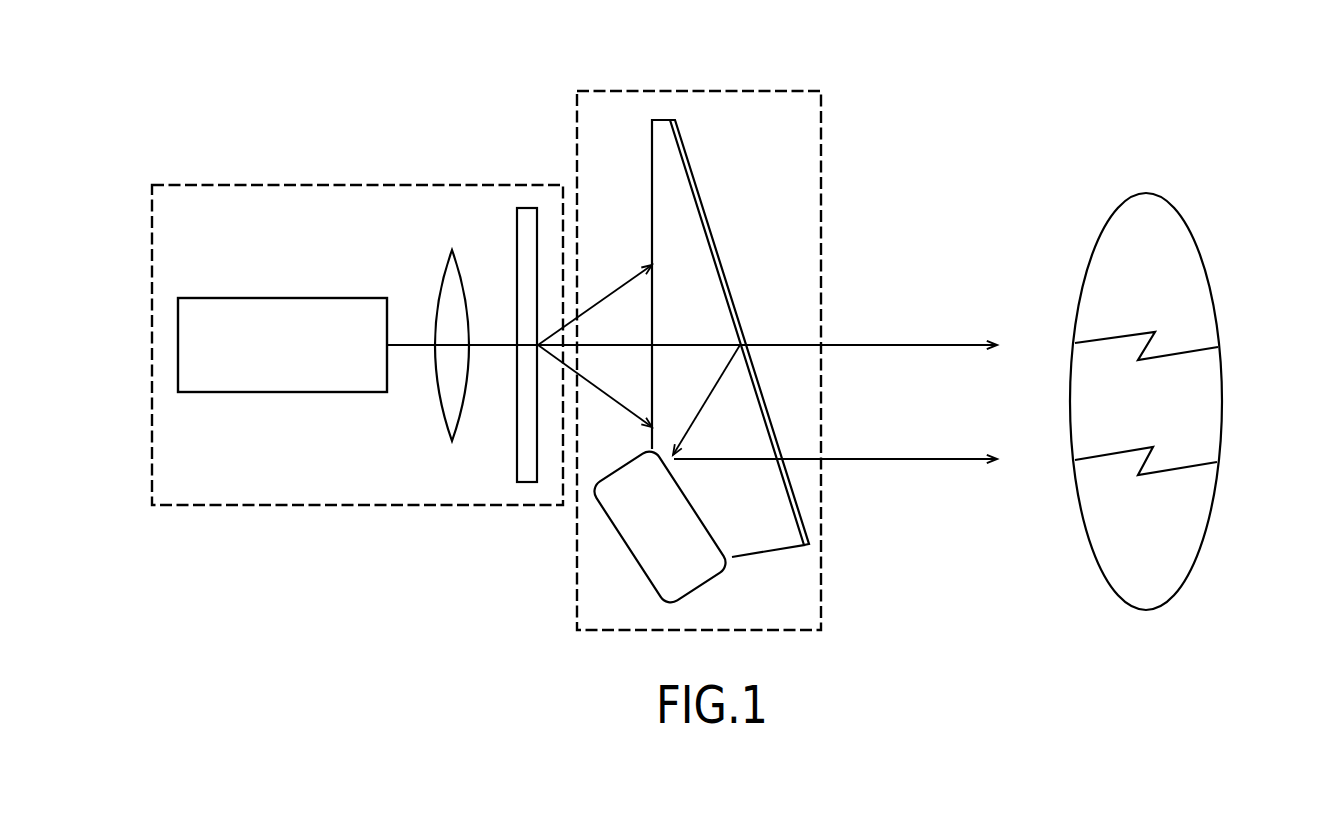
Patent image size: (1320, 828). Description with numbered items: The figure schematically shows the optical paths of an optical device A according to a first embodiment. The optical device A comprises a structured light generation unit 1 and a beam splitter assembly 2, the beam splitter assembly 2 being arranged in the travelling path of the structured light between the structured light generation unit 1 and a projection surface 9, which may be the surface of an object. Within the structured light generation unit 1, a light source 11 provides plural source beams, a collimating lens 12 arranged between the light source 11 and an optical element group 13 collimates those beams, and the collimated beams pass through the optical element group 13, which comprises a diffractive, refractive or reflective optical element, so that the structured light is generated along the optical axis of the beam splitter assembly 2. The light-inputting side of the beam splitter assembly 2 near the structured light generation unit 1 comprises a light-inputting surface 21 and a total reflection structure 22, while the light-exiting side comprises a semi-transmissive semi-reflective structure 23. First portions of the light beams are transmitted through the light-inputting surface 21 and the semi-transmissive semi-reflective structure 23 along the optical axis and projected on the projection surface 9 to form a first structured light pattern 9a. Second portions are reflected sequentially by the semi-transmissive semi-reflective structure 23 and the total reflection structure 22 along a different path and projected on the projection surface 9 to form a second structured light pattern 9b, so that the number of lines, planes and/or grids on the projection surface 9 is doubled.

The optical device A is at (457, 92).
The structured light generation unit 1 is at (252, 185).
The light source 11 is at (246, 312).
The collimating lens 12 is at (448, 297).
The optical element group 13 is at (528, 258).
The beam splitter assembly 2 is at (740, 92).
The light-inputting surface 21 is at (650, 205).
The total reflection structure 22 is at (722, 537).
The semi-transmissive semi-reflective structure 23 is at (713, 252).
The projection surface 9 is at (1178, 210).
The first structured light pattern 9a is at (1195, 343).
The second structured light pattern 9b is at (1205, 460).